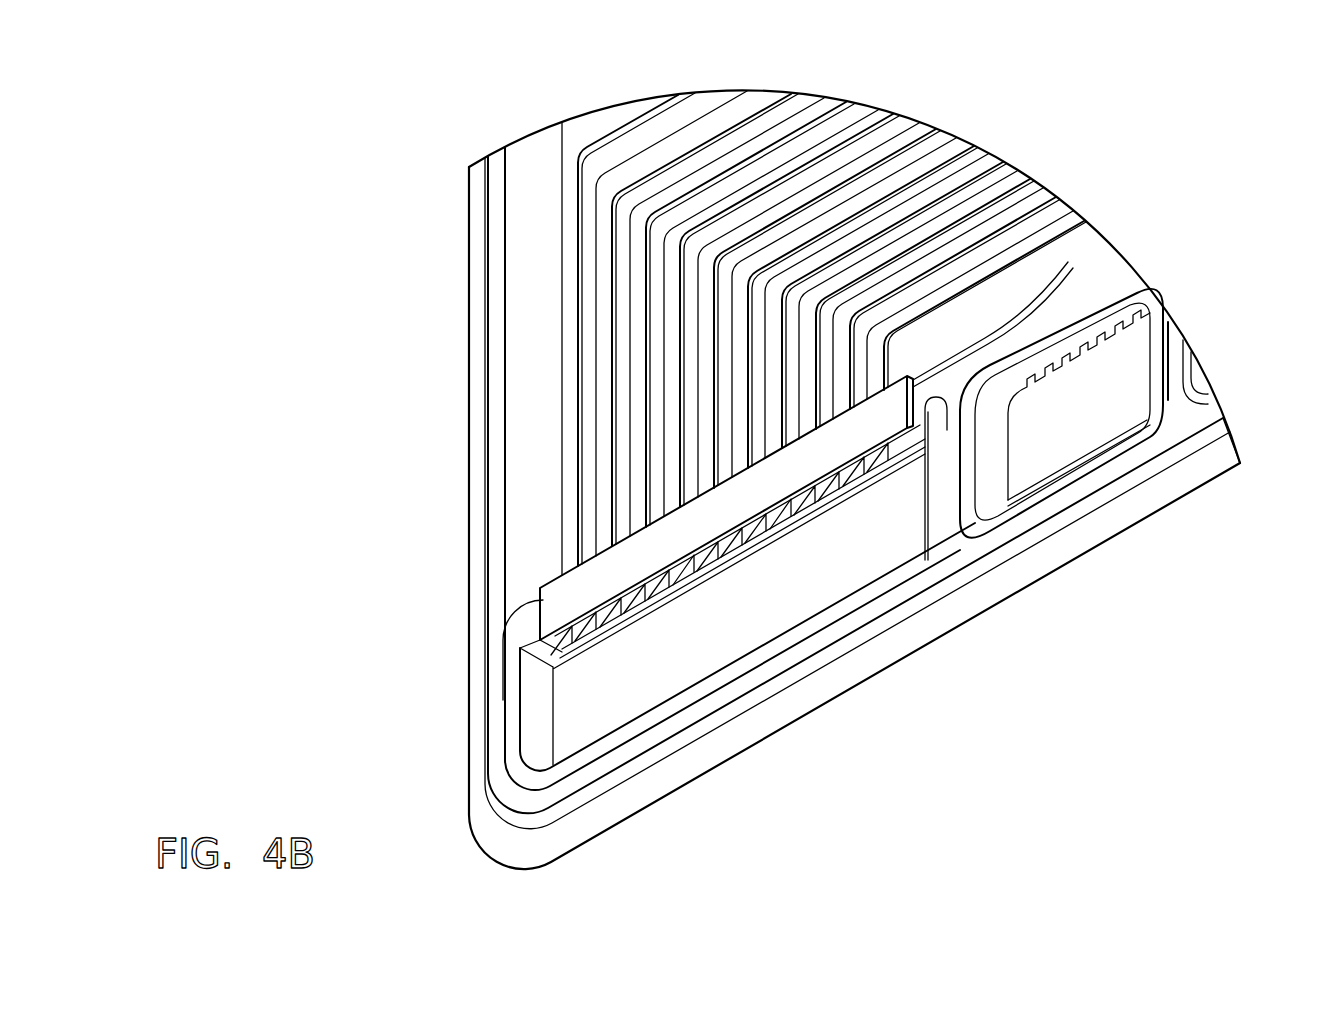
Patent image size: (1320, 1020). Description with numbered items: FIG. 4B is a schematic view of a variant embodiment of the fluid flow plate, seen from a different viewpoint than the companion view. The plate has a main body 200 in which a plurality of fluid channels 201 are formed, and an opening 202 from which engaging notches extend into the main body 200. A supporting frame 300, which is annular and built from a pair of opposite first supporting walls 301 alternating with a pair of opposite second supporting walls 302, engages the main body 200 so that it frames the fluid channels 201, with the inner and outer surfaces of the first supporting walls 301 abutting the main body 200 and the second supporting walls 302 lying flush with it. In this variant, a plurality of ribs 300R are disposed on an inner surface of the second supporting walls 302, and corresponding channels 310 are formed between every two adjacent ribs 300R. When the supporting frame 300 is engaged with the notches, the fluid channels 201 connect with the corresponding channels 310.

The main body 200 is at (858, 692).
The fluid channels 201 is at (598, 448).
The opening 202 is at (590, 713).
The supporting frame 300 is at (554, 574).
The first supporting walls 301 is at (580, 633).
The second supporting walls 302 is at (557, 601).
The corresponding channels 310 is at (692, 568).
The ribs 300R is at (636, 598).